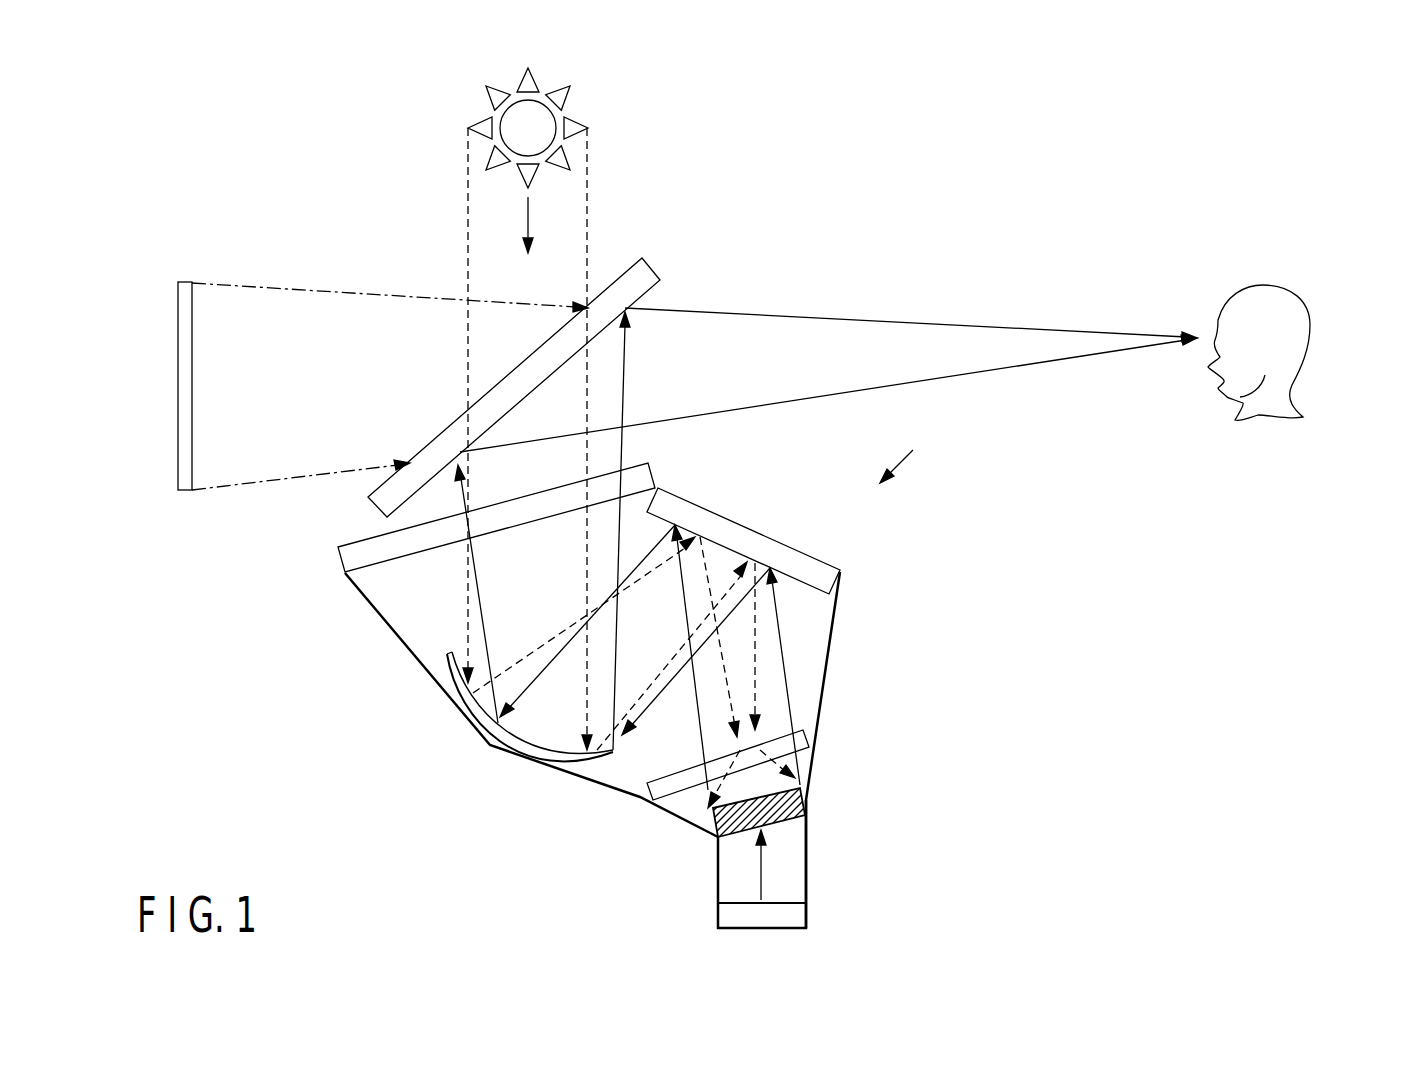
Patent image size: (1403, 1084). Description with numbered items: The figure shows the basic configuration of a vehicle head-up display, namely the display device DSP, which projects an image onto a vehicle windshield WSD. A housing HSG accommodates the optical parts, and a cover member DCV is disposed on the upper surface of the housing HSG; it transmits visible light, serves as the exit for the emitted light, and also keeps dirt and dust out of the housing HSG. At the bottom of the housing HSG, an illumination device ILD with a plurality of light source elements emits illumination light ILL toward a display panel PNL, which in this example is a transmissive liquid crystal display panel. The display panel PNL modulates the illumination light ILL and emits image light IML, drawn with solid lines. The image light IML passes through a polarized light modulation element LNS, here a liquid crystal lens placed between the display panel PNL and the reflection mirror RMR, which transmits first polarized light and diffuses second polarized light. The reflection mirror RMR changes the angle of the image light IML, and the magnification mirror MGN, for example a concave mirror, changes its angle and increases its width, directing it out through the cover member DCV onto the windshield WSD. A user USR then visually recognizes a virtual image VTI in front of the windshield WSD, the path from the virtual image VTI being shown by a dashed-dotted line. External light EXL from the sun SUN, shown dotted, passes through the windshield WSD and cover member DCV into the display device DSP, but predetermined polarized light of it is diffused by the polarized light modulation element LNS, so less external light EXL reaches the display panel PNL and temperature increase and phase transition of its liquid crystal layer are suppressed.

The sun SUN is at (598, 101).
The external light EXL is at (629, 468).
The windshield WSD is at (645, 273).
The virtual image VTI is at (180, 466).
The user USR is at (1313, 315).
The image light IML is at (622, 448).
The display device DSP is at (909, 451).
The reflection mirror RMR is at (802, 565).
The cover member DCV is at (343, 563).
The housing HSG is at (413, 657).
The magnification mirror MGN is at (513, 743).
The polarized light modulation element LNS is at (800, 743).
The display panel PNL is at (803, 798).
The illumination light ILL is at (761, 870).
The illumination device ILD is at (797, 918).